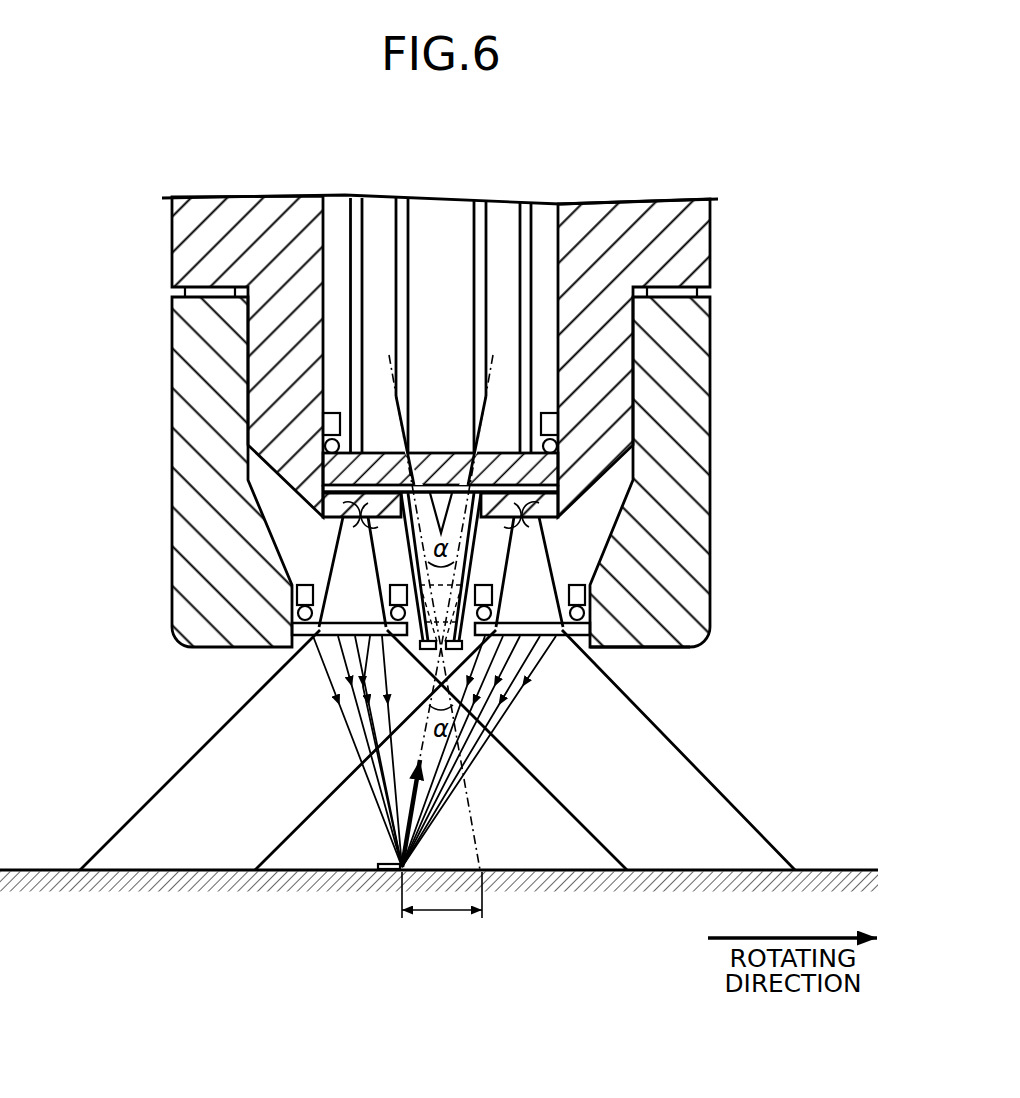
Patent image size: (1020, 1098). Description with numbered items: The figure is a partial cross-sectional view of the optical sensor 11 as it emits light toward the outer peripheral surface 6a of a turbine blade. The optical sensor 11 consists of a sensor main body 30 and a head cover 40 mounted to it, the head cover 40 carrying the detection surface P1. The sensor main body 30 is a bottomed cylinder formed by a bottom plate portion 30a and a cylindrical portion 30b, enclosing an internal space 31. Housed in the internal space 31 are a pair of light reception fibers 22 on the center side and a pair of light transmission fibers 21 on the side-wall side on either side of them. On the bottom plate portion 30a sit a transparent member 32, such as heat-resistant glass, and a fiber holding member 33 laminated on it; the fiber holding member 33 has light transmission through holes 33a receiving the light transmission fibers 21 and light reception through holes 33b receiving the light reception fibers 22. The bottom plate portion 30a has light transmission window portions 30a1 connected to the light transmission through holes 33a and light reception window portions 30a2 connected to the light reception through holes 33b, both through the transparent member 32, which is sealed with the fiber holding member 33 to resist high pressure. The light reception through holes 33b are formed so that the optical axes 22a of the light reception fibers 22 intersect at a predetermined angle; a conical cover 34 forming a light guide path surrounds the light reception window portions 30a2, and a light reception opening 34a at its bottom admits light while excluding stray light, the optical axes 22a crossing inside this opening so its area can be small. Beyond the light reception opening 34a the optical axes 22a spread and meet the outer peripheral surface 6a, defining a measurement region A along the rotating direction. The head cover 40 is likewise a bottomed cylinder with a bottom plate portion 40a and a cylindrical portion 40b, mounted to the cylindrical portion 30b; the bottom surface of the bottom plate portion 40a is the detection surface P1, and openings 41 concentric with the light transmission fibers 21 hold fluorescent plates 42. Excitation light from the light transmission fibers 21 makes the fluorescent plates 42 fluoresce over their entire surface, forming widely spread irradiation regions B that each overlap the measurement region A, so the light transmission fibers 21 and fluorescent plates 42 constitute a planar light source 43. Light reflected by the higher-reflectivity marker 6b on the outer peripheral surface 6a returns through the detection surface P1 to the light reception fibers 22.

The optical sensor 11 is at (782, 191).
The light transmission fibers 21 is at (535, 212).
The light reception fibers 22 is at (488, 212).
The optical axes 22a is at (490, 378).
The internal space 31 is at (451, 218).
The sensor main body 30 is at (693, 423).
The bottom plate portion 30a is at (590, 480).
The light transmission window portions 30a1 is at (527, 558).
The light reception window portions 30a2 is at (335, 575).
The cylindrical portion 30b is at (613, 413).
The transparent member 32 is at (385, 480).
The fiber holding member 33 is at (360, 462).
The light transmission through holes 33a is at (507, 430).
The light reception through holes 33b is at (473, 453).
The conical cover 34 is at (475, 570).
The light reception opening 34a is at (452, 697).
The head cover 40 is at (318, 487).
The bottom plate portion 40a is at (215, 645).
The cylindrical portion 40b is at (183, 598).
The openings 41 is at (564, 668).
The fluorescent plates 42 is at (526, 620).
The planar light source 43 is at (608, 722).
The detection surface P1 is at (662, 648).
The irradiation regions B is at (745, 824).
The outer peripheral surface 6a is at (848, 870).
The marker 6b is at (375, 866).
The measurement region A is at (442, 909).